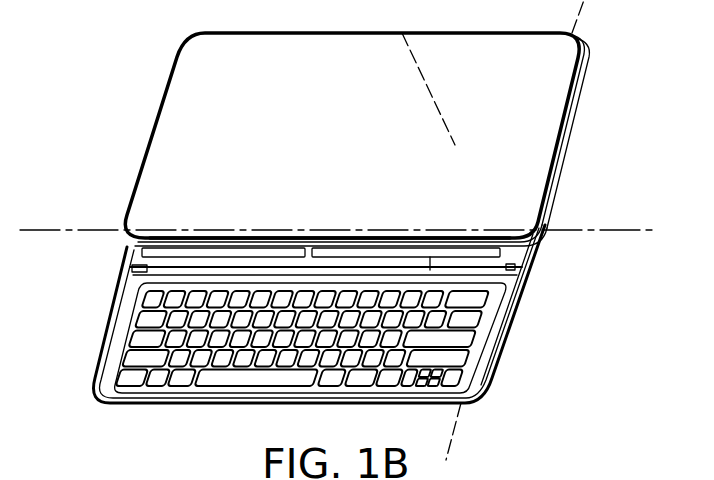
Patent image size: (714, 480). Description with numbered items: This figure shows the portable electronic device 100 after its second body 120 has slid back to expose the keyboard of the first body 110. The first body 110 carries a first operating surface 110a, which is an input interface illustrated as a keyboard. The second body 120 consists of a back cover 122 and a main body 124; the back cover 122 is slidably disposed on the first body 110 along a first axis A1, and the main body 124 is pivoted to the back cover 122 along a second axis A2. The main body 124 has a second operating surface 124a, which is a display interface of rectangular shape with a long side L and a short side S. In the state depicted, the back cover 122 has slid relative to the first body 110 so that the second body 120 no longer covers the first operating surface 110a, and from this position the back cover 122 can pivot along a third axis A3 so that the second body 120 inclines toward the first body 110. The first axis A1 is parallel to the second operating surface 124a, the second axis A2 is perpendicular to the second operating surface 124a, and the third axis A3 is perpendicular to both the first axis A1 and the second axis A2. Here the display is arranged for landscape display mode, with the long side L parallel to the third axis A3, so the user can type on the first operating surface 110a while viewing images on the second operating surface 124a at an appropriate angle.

The portable electronic device 100 is at (664, 437).
The first body 110 is at (493, 346).
The first operating surface 110a is at (330, 333).
The second body 120 is at (138, 133).
The back cover 122 is at (127, 255).
The main body 124 is at (153, 172).
The second operating surface 124a is at (539, 127).
The long side L is at (218, 233).
The short side S is at (530, 173).
The first axis A1 is at (583, 6).
The second axis A2 is at (423, 77).
The third axis A3 is at (599, 229).